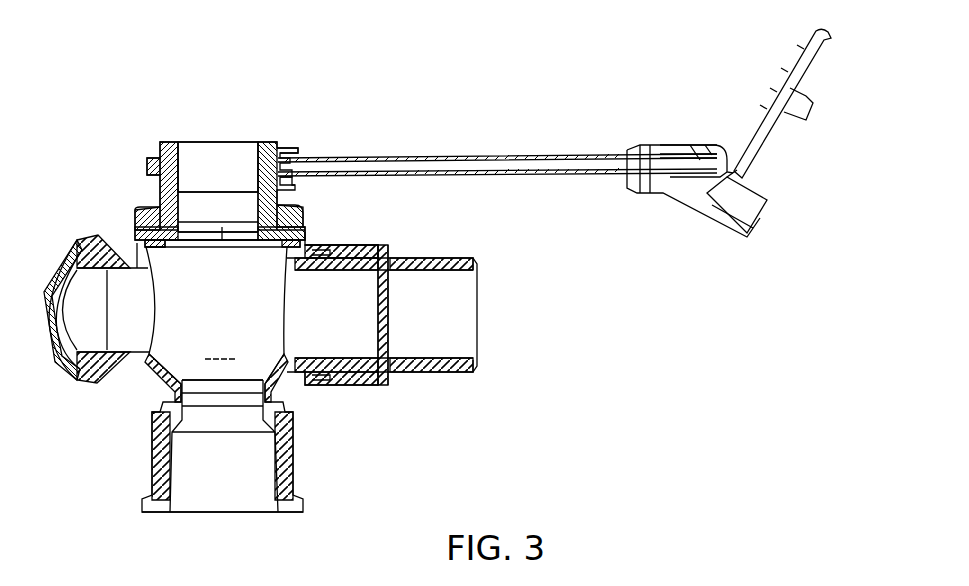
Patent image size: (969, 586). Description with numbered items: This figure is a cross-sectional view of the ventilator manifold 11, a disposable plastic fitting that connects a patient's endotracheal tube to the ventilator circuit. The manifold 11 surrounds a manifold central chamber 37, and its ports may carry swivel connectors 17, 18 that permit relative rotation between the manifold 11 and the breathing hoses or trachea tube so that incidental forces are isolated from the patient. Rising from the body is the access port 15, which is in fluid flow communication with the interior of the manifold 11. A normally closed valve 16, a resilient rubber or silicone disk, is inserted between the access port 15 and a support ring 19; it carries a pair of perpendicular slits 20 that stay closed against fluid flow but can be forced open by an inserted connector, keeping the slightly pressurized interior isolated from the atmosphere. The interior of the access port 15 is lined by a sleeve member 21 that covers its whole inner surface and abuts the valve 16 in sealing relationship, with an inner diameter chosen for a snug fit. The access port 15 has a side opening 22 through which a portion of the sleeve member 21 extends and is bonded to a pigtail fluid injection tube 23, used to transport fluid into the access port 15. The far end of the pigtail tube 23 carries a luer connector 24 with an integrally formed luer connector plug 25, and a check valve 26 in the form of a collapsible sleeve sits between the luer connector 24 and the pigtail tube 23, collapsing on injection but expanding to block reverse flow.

The ventilator manifold 11 is at (153, 383).
The access port 15 is at (144, 188).
The normally closed valve 16 is at (201, 262).
The swivel connector 17 is at (463, 368).
The swivel connector 18 is at (147, 497).
The support ring 19 is at (147, 241).
The slits 20 is at (247, 233).
The sleeve member 21 is at (183, 155).
The side opening 22 is at (277, 148).
The pigtail fluid injection tube 23 is at (368, 156).
The luer connector 24 is at (683, 210).
The luer connector plug 25 is at (808, 118).
The check valve 26 is at (690, 156).
The manifold central chamber 37 is at (222, 345).